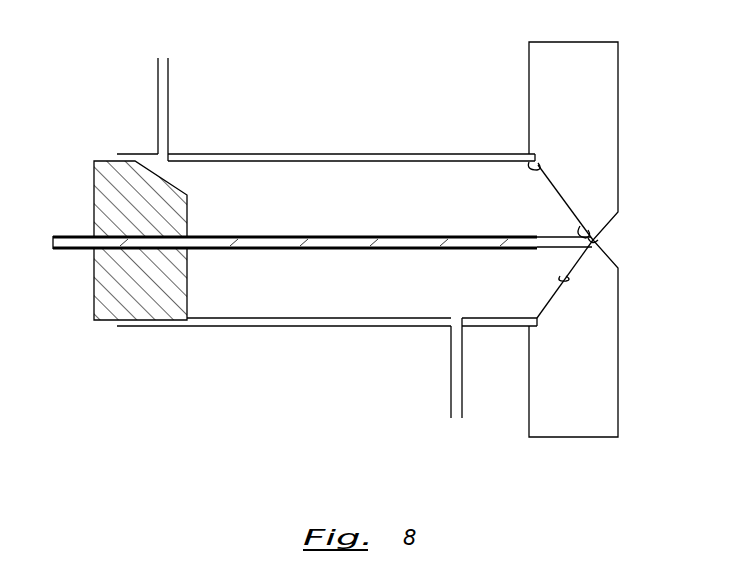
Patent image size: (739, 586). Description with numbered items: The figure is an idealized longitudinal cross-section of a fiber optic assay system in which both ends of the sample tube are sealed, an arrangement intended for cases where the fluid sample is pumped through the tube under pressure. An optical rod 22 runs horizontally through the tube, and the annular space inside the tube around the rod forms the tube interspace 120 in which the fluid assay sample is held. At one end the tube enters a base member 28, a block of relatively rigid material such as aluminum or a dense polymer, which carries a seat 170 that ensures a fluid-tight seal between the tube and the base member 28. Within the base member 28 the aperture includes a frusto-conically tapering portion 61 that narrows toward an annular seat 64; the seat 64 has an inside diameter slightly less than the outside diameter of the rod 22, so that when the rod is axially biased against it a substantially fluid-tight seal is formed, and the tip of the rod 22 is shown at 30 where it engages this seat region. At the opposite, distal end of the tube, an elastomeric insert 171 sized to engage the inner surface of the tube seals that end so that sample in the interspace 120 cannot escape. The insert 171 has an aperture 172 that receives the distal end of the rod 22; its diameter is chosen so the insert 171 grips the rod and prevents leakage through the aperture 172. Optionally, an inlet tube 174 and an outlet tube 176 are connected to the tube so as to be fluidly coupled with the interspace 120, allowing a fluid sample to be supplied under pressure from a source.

The optical rod 22 is at (73, 250).
The base member 28 is at (590, 42).
The rod tip 30 is at (598, 242).
The frusto-conically tapering portion 61 is at (566, 279).
The annular seat 64 is at (582, 228).
The tube interspace 120 is at (280, 166).
The seat 170 is at (540, 168).
The insert 171 is at (94, 298).
The aperture 172 is at (96, 238).
The inlet tube 174 is at (169, 79).
The outlet tube 176 is at (450, 384).